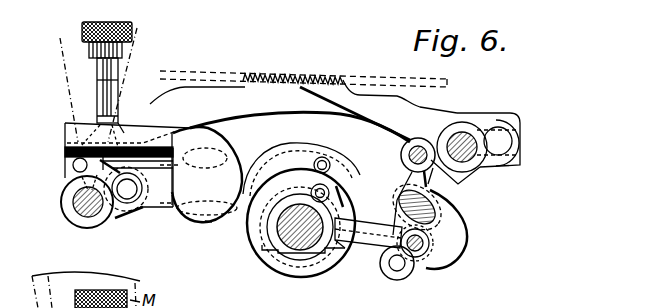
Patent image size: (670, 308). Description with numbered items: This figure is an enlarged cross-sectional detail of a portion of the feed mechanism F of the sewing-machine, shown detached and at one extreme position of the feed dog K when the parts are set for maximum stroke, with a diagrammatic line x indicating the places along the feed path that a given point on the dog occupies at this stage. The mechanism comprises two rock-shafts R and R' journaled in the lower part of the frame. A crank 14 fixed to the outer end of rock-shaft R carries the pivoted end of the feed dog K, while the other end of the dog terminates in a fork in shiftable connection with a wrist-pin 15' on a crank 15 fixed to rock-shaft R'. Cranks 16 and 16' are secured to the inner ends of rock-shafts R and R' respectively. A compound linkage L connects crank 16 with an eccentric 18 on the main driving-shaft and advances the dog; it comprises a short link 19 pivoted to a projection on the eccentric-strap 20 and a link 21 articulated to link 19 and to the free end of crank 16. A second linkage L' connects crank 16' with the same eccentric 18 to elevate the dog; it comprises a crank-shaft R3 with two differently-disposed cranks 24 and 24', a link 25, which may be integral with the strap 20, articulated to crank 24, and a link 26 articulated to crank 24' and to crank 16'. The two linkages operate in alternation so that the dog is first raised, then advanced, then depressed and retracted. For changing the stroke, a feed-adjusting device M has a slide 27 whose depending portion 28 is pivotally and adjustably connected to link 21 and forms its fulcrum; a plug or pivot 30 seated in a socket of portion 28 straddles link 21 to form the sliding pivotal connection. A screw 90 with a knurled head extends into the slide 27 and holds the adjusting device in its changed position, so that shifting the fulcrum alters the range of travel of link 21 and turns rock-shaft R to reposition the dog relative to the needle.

The feed-adjusting device M is at (104, 24).
The screw 90 is at (108, 93).
The slide 27 is at (122, 134).
The feed dog K is at (261, 149).
The feed mechanism F is at (303, 62).
The diagrammatic line x is at (293, 68).
The rock-shaft R is at (74, 209).
The crank 14 is at (70, 170).
The crank 16 is at (125, 207).
The compound linkage L is at (197, 180).
The link 21 is at (176, 212).
The depending portion 28 is at (208, 223).
The plug or pivot 30 is at (233, 152).
The eccentric-strap 20 is at (272, 226).
The eccentric 18 is at (293, 212).
The short link 19 is at (337, 178).
The link 25 is at (362, 226).
The linkage L' is at (346, 257).
The crank 16' is at (431, 143).
The rock-shaft R' is at (471, 128).
The wrist-pin 15' is at (523, 143).
The crank 15 is at (504, 147).
The link 26 is at (433, 183).
The crank-shaft R3 is at (440, 213).
The crank 24 is at (419, 263).
The crank 24' is at (388, 276).